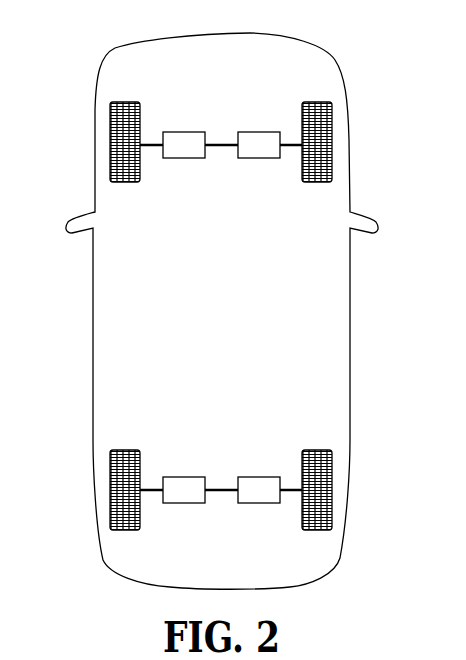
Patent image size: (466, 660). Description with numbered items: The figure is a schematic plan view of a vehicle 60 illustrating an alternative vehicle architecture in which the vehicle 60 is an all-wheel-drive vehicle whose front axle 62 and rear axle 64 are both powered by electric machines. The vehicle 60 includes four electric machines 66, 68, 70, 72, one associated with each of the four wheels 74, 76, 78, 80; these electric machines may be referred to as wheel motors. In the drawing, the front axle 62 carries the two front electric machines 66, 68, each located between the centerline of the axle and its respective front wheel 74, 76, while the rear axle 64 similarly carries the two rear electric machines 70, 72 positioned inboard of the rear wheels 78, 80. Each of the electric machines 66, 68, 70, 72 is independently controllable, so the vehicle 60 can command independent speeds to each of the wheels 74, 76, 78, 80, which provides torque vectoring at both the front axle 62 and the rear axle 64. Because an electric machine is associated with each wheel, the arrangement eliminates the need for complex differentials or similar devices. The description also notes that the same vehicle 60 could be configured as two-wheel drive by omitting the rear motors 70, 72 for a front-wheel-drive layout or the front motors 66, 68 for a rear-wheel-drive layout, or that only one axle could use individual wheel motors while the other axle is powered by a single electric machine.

The vehicle 60 is at (210, 74).
The front axle 62 is at (217, 147).
The rear axle 64 is at (217, 492).
The electric machine 66 is at (203, 130).
The electric machine 68 is at (247, 130).
The electric machine 70 is at (203, 476).
The electric machine 72 is at (247, 476).
The wheel 74 is at (110, 139).
The wheel 76 is at (332, 139).
The wheel 78 is at (110, 489).
The wheel 80 is at (332, 489).